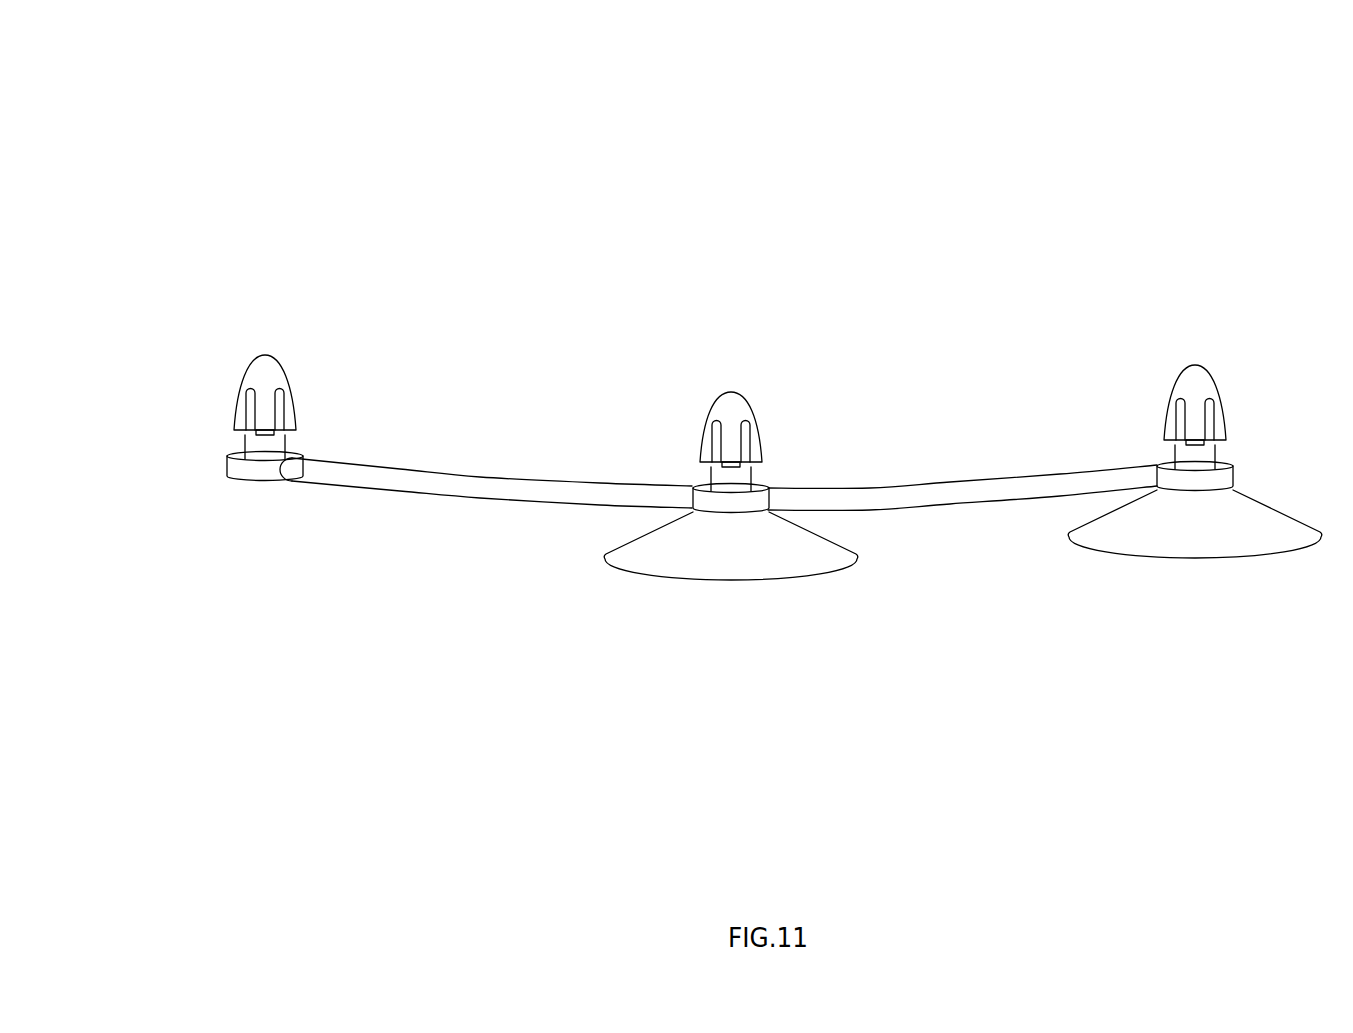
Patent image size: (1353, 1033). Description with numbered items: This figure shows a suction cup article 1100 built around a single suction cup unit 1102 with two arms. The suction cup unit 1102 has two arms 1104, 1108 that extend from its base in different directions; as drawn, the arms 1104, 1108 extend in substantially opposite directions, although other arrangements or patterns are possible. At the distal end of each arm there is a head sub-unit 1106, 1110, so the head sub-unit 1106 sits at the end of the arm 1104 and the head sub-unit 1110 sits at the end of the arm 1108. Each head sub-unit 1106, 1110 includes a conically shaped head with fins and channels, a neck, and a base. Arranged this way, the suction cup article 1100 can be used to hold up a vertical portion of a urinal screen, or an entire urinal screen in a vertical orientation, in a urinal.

The suction cup article 1100 is at (332, 49).
The suction cup unit 1102 is at (778, 448).
The arm 1104 is at (950, 482).
The head sub-unit 1106 is at (1242, 428).
The arm 1108 is at (493, 475).
The head sub-unit 1110 is at (213, 418).